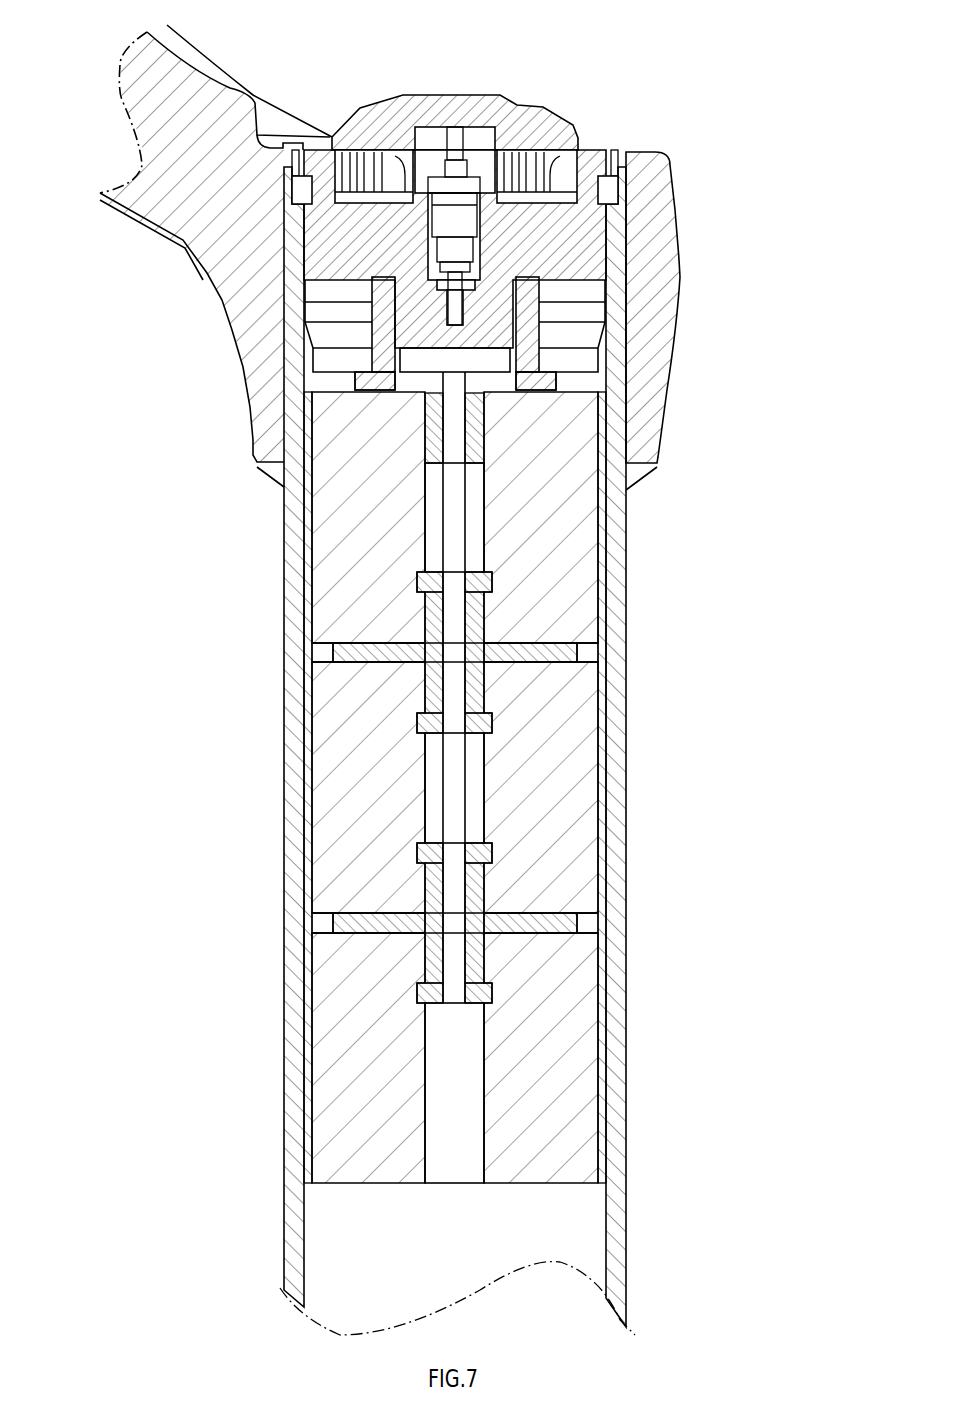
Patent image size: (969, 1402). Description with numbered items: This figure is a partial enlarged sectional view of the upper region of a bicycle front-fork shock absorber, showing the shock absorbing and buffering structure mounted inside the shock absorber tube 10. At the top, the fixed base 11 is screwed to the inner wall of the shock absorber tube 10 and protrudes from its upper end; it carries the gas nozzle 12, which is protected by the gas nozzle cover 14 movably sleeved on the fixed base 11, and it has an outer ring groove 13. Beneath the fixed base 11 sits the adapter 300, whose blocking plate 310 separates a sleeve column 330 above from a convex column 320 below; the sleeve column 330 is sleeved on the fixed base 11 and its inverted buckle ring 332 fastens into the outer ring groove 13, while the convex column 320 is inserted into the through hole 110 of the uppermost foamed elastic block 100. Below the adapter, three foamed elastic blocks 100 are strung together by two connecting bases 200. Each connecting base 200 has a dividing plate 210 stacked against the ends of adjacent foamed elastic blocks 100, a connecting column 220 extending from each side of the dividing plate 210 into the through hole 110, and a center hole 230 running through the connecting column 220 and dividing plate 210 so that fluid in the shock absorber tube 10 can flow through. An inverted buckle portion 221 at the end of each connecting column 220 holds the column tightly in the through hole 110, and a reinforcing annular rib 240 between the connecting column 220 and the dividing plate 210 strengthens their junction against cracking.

The shock absorber tube 10 is at (293, 1213).
The fixed base 11 is at (607, 140).
The gas nozzle 12 is at (458, 226).
The outer ring groove 13 is at (529, 247).
The gas nozzle cover 14 is at (478, 110).
The foamed elastic block 100 is at (340, 473).
The through hole 110 is at (485, 527).
The connecting base 200 is at (598, 651).
The dividing plate 210 is at (313, 653).
The connecting column 220 is at (497, 625).
The inverted buckle portion 221 is at (495, 580).
The center hole 230 is at (450, 722).
The reinforcing annular rib 240 is at (622, 668).
The adapter 300 is at (552, 306).
The blocking plate 310 is at (553, 385).
The convex column 320 is at (435, 433).
The sleeve column 330 is at (548, 330).
The inverted buckle ring 332 is at (508, 282).